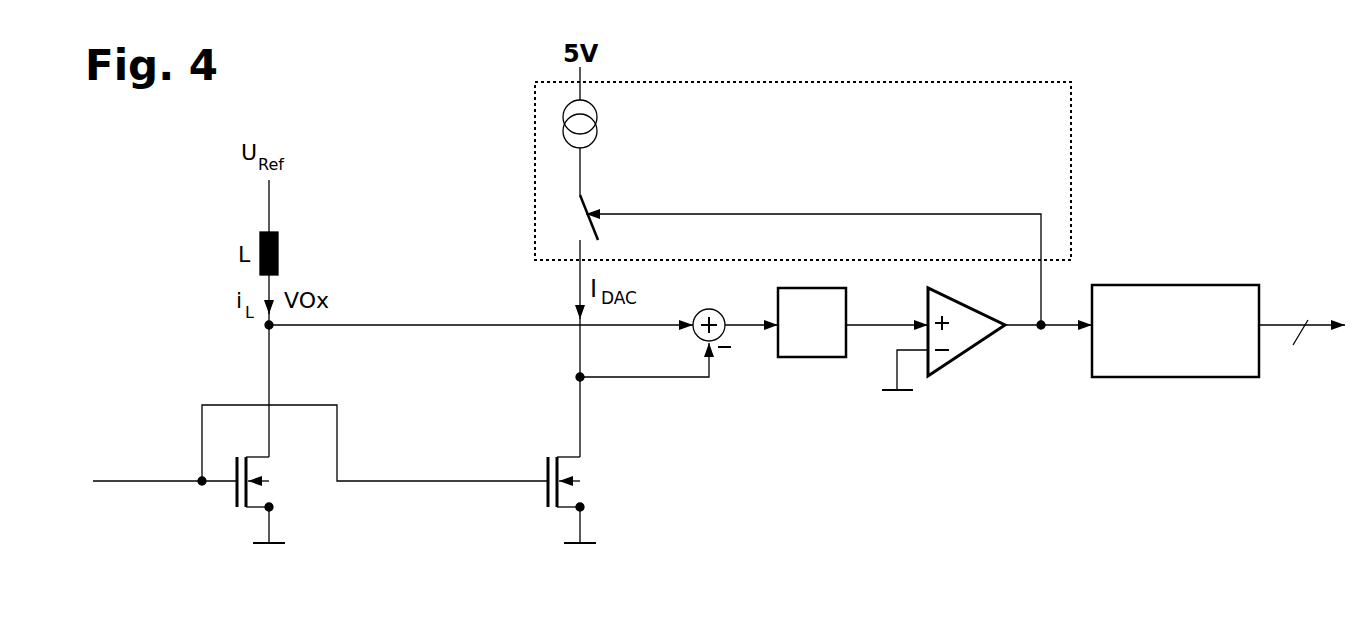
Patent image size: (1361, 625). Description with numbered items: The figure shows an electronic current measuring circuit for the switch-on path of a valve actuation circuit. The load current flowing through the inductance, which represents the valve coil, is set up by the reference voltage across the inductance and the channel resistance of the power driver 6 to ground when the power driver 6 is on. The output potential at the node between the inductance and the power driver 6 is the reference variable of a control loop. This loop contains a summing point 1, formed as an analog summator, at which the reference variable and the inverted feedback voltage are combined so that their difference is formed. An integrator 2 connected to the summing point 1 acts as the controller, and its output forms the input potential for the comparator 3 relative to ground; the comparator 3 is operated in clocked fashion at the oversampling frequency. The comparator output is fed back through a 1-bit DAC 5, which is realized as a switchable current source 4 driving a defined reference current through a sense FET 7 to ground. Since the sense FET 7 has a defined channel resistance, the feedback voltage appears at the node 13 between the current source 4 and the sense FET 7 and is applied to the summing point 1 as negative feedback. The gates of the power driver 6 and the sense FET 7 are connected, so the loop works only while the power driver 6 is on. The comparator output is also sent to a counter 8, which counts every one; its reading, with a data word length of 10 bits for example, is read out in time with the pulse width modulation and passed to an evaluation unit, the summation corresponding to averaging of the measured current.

The summing point 1 is at (697, 338).
The integrator 2 is at (812, 358).
The comparator 3 is at (968, 356).
The switchable current source 4 is at (598, 117).
The 1-bit DAC 5 is at (842, 171).
The power driver 6 is at (227, 496).
The sense FET 7 is at (538, 495).
The counter 8 is at (1177, 378).
The data word length 10 is at (1302, 315).
The node 13 is at (578, 377).